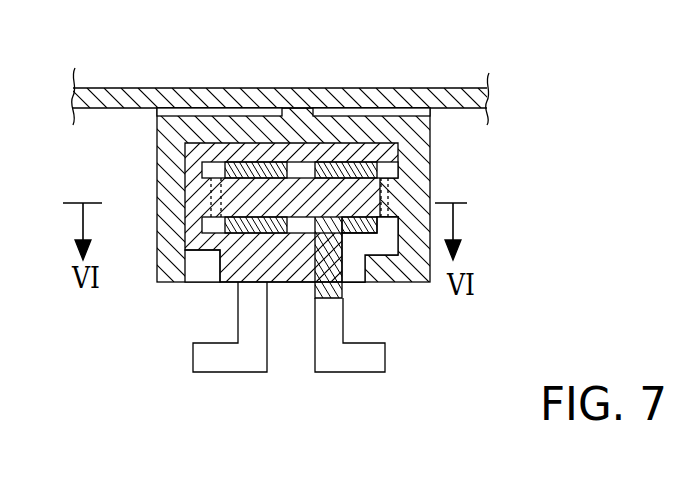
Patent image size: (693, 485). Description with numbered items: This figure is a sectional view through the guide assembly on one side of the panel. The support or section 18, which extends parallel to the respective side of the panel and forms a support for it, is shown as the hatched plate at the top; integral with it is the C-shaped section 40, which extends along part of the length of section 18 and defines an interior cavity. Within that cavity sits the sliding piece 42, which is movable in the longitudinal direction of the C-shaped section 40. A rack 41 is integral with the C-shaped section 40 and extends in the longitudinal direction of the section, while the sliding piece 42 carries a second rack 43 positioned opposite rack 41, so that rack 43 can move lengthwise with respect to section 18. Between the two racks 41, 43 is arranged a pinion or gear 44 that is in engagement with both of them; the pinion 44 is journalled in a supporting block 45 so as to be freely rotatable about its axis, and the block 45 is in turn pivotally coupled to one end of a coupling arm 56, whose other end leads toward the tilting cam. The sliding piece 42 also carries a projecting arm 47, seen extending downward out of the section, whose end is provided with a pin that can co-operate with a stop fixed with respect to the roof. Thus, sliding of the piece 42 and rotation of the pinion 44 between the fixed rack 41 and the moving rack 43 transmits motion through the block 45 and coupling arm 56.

The section 18 is at (114, 101).
The C-shaped section 40 is at (168, 170).
The rack 41 is at (390, 190).
The sliding piece 42 is at (207, 142).
The rack 43 is at (212, 209).
The pinion or gear 44 is at (251, 142).
The supporting block 45 is at (352, 142).
The projecting arm 47 is at (267, 333).
The coupling arm 56 is at (353, 373).